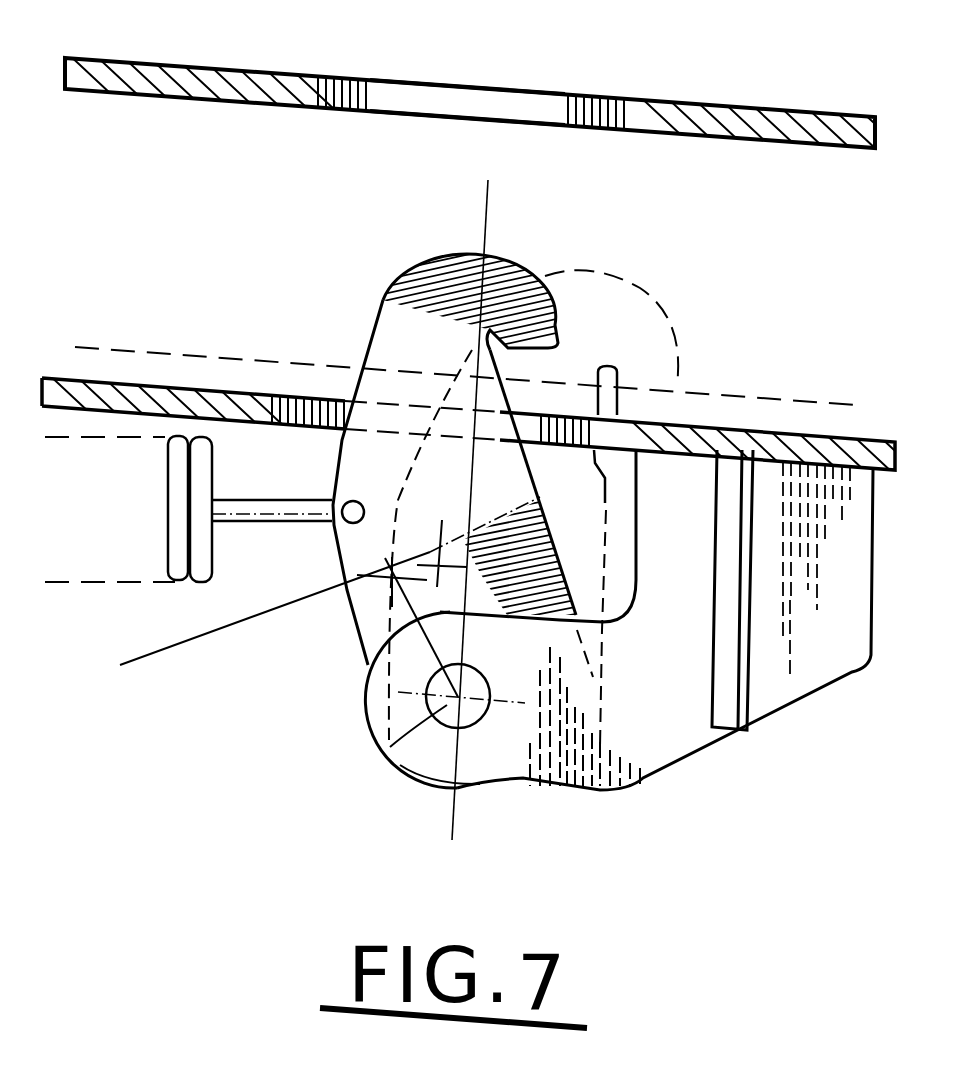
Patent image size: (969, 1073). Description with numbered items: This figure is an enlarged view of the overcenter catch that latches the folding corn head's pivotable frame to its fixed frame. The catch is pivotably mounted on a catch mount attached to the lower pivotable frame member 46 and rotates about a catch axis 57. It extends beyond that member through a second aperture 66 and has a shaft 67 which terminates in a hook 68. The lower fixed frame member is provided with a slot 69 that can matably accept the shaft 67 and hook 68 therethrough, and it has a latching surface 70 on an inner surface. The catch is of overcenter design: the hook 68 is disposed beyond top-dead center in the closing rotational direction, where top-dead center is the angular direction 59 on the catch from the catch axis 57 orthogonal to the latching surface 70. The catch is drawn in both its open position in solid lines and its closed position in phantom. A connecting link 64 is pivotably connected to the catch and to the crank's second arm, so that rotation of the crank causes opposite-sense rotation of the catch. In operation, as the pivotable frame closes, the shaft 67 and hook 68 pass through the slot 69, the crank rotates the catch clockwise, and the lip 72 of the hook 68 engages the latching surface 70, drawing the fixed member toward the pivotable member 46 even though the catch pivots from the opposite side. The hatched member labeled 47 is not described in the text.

The lower pivotable frame member 46 is at (697, 452).
The upper frame member 47 is at (765, 117).
The catch axis 57 is at (388, 748).
The angular direction 59 is at (468, 838).
The connecting link 64 is at (272, 610).
The second aperture 66 is at (308, 397).
The shaft 67 is at (373, 313).
The hook 68 is at (441, 272).
The slot 69 is at (437, 92).
The latching surface 70 is at (640, 100).
The lip 72 is at (548, 349).